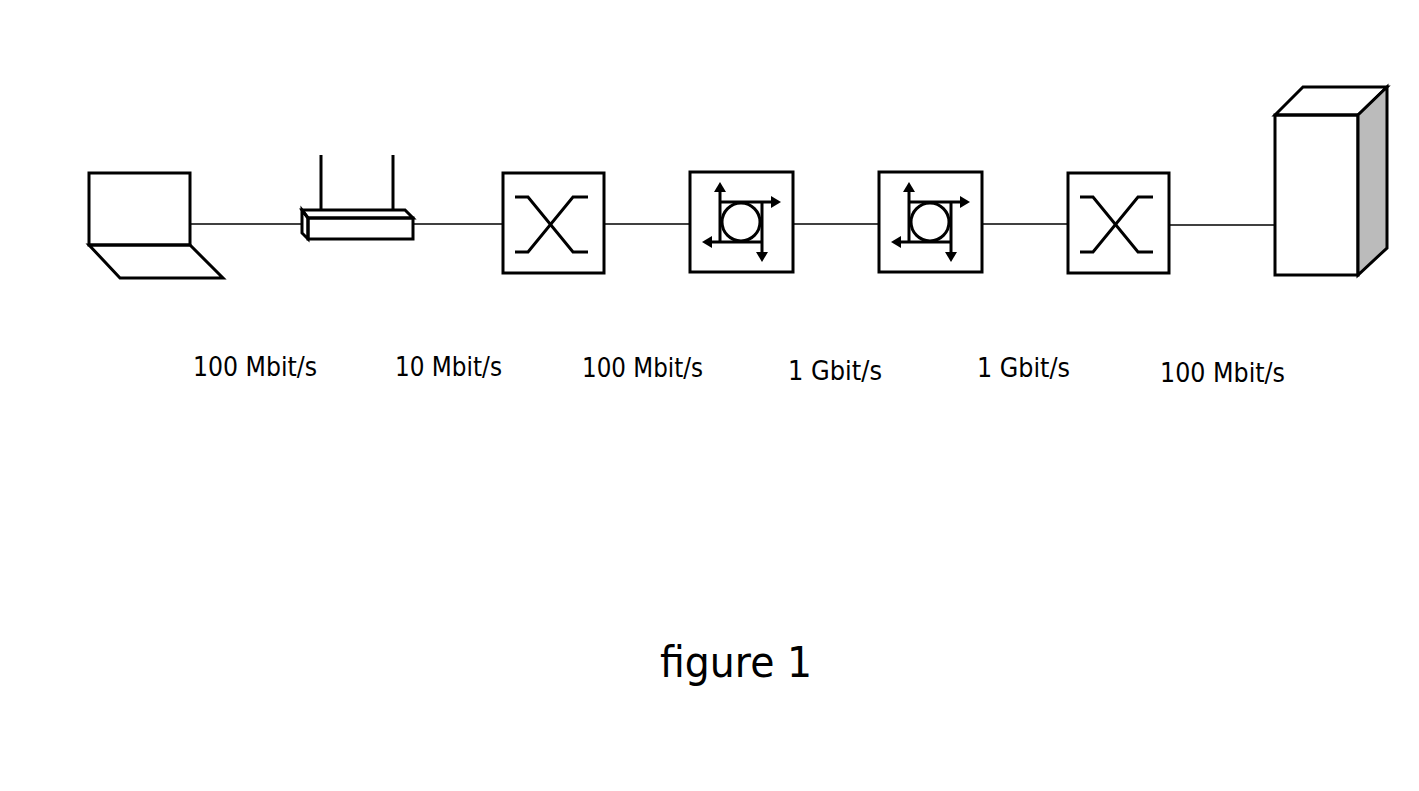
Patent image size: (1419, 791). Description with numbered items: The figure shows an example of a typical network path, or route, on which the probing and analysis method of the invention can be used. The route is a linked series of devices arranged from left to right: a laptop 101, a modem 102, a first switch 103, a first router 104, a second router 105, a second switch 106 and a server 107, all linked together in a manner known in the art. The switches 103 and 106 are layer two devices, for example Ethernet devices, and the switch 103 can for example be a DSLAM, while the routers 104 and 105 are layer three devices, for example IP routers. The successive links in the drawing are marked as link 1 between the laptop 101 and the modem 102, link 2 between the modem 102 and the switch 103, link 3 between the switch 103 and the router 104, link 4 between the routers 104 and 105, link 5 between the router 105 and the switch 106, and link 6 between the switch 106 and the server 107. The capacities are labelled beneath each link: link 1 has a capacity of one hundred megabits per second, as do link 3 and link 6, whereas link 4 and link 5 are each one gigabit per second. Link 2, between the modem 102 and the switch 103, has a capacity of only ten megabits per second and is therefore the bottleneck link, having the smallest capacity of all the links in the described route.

The laptop 101 is at (156, 181).
The modem 102 is at (357, 162).
The switch 103 is at (553, 180).
The router 104 is at (741, 179).
The router 105 is at (930, 179).
The switch 106 is at (1118, 180).
The server 107 is at (1331, 146).
The network link (100 Mbit/s) 1 is at (246, 255).
The network link (10 Mbit/s) 2 is at (458, 255).
The network link (100 Mbit/s) 3 is at (647, 255).
The network link (1 Gbit/s) 4 is at (836, 255).
The network link (1 Gbit/s) 5 is at (1025, 256).
The network link (100 Mbit/s) 6 is at (1222, 257).